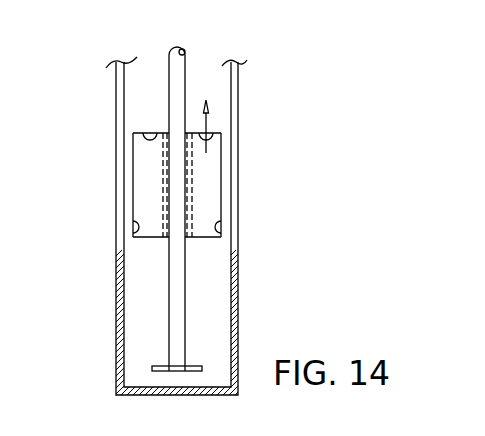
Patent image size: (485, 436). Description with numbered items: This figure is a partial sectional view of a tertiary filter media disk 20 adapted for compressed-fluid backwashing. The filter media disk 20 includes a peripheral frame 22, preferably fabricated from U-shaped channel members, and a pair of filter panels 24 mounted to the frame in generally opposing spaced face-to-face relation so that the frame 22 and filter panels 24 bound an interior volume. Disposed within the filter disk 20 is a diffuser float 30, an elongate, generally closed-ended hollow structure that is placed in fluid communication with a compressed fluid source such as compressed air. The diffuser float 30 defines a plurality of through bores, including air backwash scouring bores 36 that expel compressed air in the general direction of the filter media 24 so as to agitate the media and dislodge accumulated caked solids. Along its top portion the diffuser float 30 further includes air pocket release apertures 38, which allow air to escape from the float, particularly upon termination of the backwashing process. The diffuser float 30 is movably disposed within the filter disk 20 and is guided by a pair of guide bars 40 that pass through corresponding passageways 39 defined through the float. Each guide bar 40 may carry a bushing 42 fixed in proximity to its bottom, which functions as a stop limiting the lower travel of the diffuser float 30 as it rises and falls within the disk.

The tertiary filter media disk 20 is at (200, 226).
The peripheral frame 22 is at (238, 271).
The filter panels 24 is at (118, 143).
The diffuser float 30 is at (133, 176).
The air backwash scouring bores 36 is at (133, 228).
The air pocket release apertures 38 is at (212, 126).
The passageways 39 is at (168, 133).
The guide bars 40 is at (181, 68).
The bushing 42 is at (151, 367).